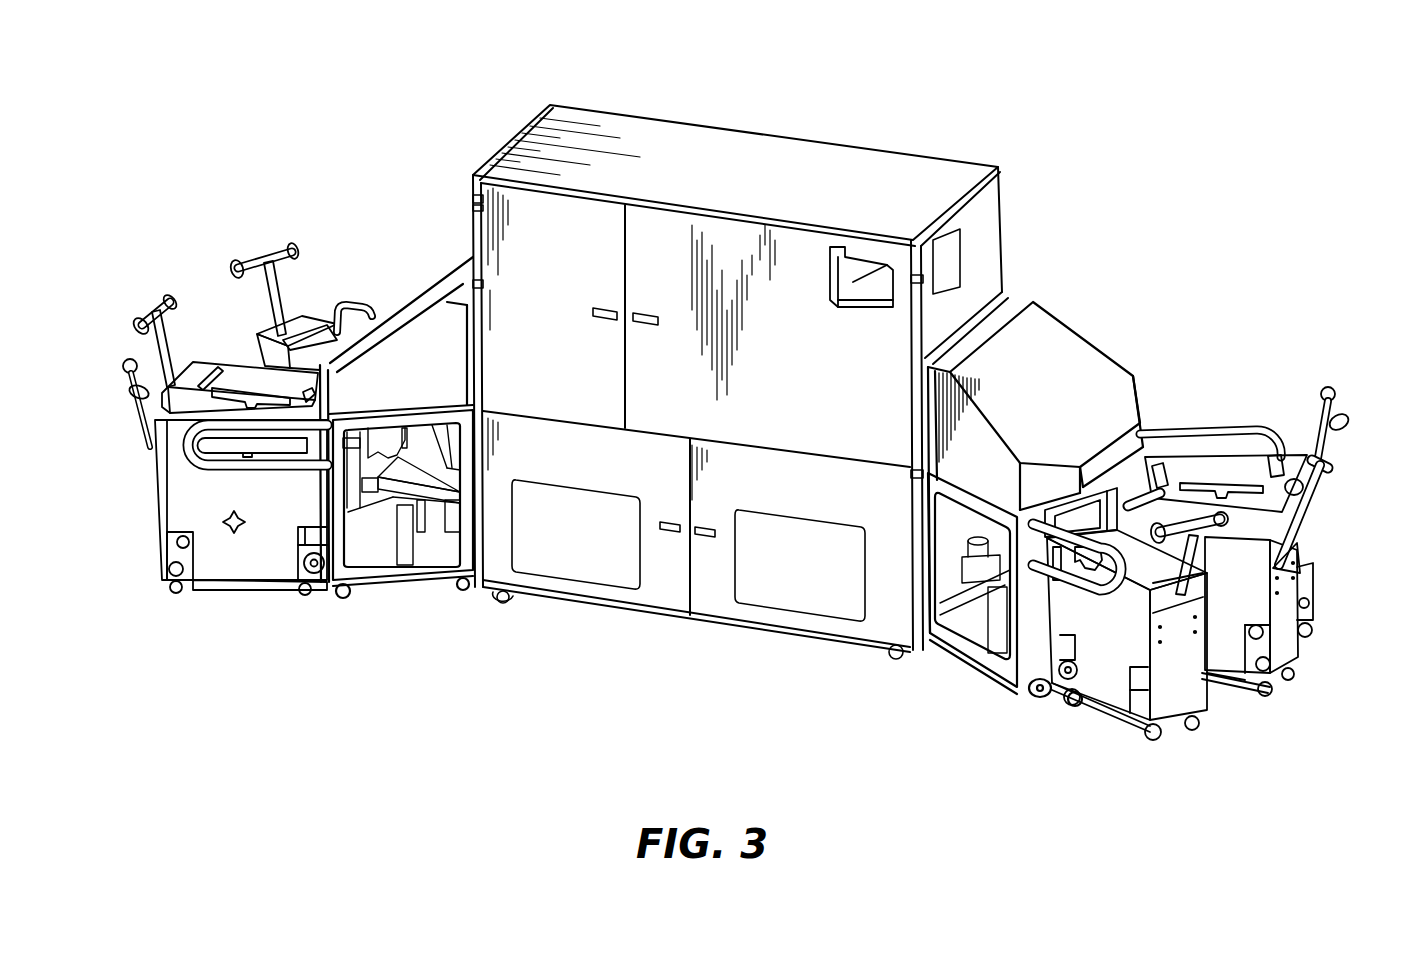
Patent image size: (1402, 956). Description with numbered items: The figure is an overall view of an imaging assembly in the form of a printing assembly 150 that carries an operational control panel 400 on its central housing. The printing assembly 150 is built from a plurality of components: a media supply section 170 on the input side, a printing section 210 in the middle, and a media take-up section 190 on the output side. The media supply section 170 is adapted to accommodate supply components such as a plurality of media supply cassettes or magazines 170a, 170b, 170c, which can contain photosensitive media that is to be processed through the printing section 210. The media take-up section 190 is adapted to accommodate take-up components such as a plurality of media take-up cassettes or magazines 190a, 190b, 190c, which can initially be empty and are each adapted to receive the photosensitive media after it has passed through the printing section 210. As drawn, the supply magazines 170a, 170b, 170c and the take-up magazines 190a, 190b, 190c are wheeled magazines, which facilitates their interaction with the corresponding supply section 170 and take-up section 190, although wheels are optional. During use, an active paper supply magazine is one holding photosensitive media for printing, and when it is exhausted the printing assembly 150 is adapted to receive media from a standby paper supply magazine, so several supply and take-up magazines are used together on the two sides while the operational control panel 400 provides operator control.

The printing assembly 150 is at (870, 122).
The printing section 210 is at (723, 140).
The operational control panel 400 is at (877, 277).
The media supply section 170 is at (412, 303).
The media supply magazine 170a is at (178, 499).
The media supply magazine 170b is at (231, 373).
The media supply magazine 170c is at (313, 320).
The media take-up section 190 is at (1105, 373).
The media take-up magazine 190a is at (1188, 682).
The media take-up magazine 190b is at (1290, 592).
The media take-up magazine 190c is at (1210, 470).